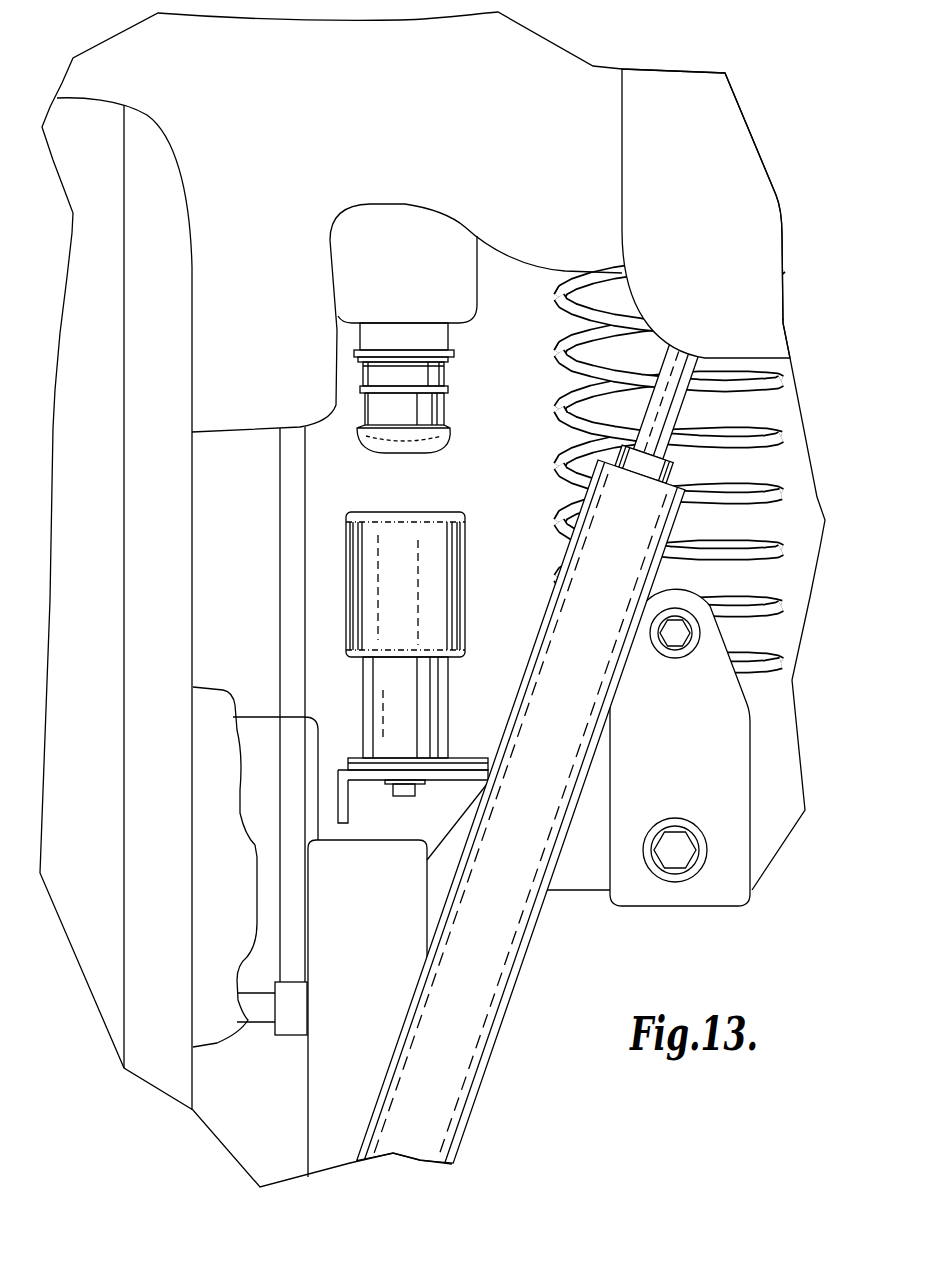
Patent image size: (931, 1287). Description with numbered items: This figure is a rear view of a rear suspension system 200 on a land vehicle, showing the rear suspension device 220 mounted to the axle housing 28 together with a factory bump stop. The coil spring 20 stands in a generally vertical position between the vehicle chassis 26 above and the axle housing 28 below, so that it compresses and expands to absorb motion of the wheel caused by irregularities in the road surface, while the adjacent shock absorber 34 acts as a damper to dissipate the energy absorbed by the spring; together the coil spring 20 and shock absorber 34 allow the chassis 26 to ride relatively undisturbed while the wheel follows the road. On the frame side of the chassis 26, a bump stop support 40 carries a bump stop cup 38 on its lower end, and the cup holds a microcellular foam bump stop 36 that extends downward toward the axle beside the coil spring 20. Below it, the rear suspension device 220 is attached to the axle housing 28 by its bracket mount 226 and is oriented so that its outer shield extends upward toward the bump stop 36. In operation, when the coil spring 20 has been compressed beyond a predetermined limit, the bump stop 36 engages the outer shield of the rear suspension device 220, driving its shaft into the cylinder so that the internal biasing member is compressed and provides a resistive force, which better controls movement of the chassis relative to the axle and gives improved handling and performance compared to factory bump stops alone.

The vehicle chassis 26 is at (556, 71).
The bump stop support 40 is at (477, 281).
The bump stop cup 38 is at (445, 369).
The bump stop 36 is at (448, 432).
The coil spring 20 is at (780, 557).
The shock absorber 34 is at (482, 1057).
The rear suspension system 200 is at (723, 922).
The rear suspension device 220 is at (462, 557).
The bracket mount 226 is at (465, 760).
The axle housing 28 is at (343, 768).